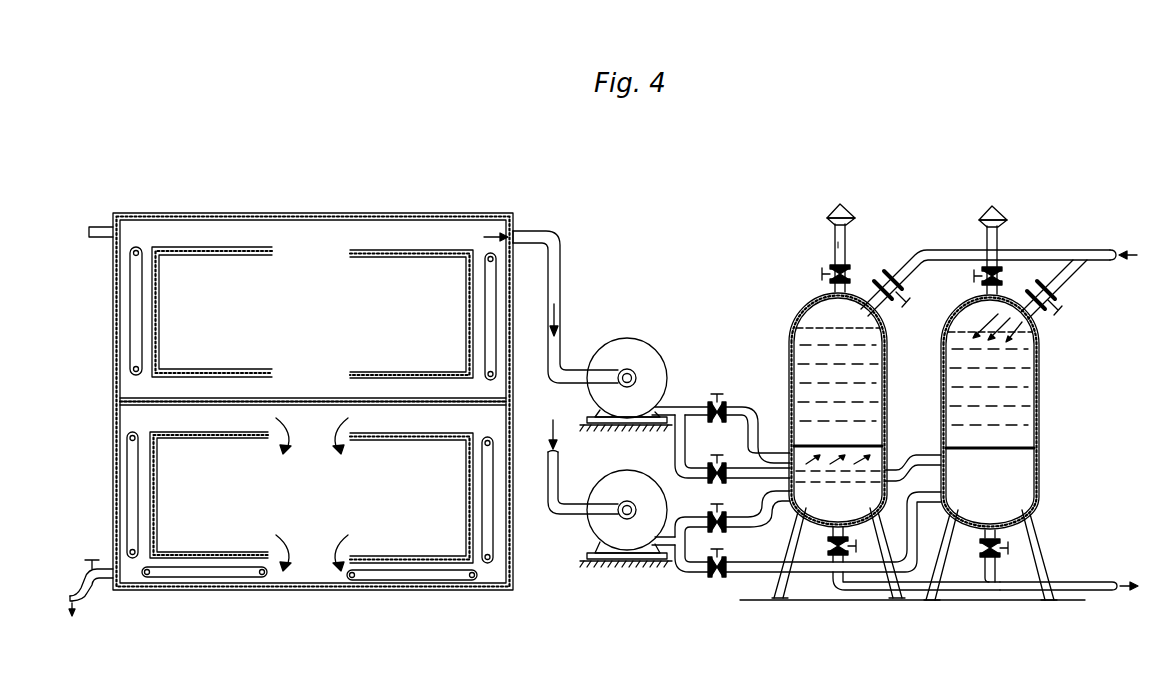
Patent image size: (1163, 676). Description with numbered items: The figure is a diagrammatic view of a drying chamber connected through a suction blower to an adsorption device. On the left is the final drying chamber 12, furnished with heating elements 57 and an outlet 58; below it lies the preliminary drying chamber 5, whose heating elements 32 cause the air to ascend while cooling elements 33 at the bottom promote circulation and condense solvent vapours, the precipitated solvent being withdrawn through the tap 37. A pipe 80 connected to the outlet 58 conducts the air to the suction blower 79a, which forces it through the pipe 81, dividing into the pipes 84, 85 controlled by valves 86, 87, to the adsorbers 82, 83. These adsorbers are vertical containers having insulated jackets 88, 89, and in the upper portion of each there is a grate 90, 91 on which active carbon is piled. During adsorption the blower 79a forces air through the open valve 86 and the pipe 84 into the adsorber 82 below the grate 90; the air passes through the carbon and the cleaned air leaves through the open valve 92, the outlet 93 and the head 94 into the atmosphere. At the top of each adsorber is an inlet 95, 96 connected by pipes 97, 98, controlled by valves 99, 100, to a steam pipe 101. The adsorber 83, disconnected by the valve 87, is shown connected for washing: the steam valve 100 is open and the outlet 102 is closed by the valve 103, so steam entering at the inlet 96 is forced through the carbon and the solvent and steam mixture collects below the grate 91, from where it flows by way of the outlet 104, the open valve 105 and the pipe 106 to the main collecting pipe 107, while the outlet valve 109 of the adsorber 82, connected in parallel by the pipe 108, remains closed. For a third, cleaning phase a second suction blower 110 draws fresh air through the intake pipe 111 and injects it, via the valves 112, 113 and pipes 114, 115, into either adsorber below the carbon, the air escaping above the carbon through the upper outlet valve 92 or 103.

The final drying chamber 12 is at (301, 296).
The heating elements 57 is at (141, 305).
The heating elements 32 is at (137, 554).
The cooling elements 33 is at (255, 576).
The preliminary drying chamber 5 is at (312, 494).
The tap 37 is at (92, 582).
The outlet 58 is at (519, 232).
The pipe 80 is at (561, 270).
The suction blower 79a is at (634, 348).
The pipe 81 is at (664, 404).
The valve 86 is at (722, 393).
The valve 87 is at (715, 454).
The pipe 84 is at (756, 417).
The pipe 85 is at (744, 480).
The intake pipe 111 is at (559, 466).
The suction blower 110 is at (621, 476).
The pipe 114 is at (752, 522).
The valve 112 is at (710, 509).
The valve 113 is at (724, 560).
The pipe 115 is at (789, 573).
The adsorber 82 is at (868, 390).
The insulated jacket 88 is at (880, 408).
The grate 90 is at (842, 444).
The adsorber 83 is at (1020, 392).
The insulated jacket 89 is at (1032, 410).
The grate 91 is at (996, 450).
The outlet 104 is at (1000, 500).
The outlet 93 is at (846, 256).
The valve 92 is at (829, 272).
The head 94 is at (848, 210).
The outlet 102 is at (998, 246).
The valve 103 is at (979, 276).
The pipe 97 is at (916, 257).
The steam pipe 101 is at (1093, 253).
The inlet 95 is at (878, 283).
The valve 99 is at (907, 301).
The pipe 98 is at (1068, 274).
The inlet 96 is at (1030, 295).
The valve 100 is at (1059, 309).
The outlet valve 109 is at (858, 547).
The pipe 108 is at (950, 600).
The main collecting pipe 107 is at (1086, 582).
The valve 105 is at (1002, 550).
The pipe 106 is at (984, 571).